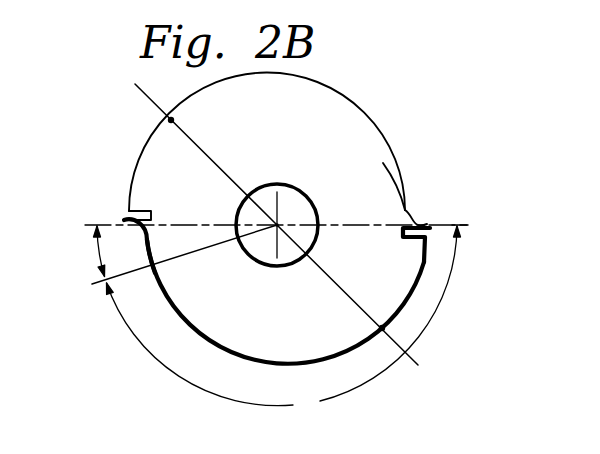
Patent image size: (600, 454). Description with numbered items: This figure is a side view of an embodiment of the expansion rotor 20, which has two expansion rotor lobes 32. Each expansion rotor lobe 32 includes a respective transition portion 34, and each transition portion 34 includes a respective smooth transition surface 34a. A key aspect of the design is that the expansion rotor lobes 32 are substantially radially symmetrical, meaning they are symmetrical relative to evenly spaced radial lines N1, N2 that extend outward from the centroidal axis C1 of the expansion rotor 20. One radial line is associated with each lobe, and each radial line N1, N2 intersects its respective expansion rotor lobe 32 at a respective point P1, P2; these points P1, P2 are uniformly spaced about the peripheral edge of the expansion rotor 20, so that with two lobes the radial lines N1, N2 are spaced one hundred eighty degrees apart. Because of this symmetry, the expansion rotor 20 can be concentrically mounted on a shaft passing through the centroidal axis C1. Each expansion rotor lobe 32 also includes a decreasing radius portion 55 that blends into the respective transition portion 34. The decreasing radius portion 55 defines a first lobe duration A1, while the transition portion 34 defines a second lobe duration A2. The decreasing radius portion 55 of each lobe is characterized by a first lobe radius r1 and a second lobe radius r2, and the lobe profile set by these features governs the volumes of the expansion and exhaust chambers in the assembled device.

The expansion rotor 20 is at (261, 236).
The expansion rotor lobe 32 is at (261, 236).
The transition portion 34 is at (420, 212).
The smooth transition surface 34a is at (405, 197).
The decreasing radius portion 55 is at (340, 114).
The centroidal axis C1 is at (279, 224).
The point P1 is at (170, 130).
The point P2 is at (383, 322).
The radial line N1 is at (143, 95).
The radial line N2 is at (419, 360).
The first lobe radius r1 is at (175, 260).
The second lobe radius r2 is at (472, 227).
The first lobe duration A1 is at (284, 321).
The second lobe duration A2 is at (96, 254).